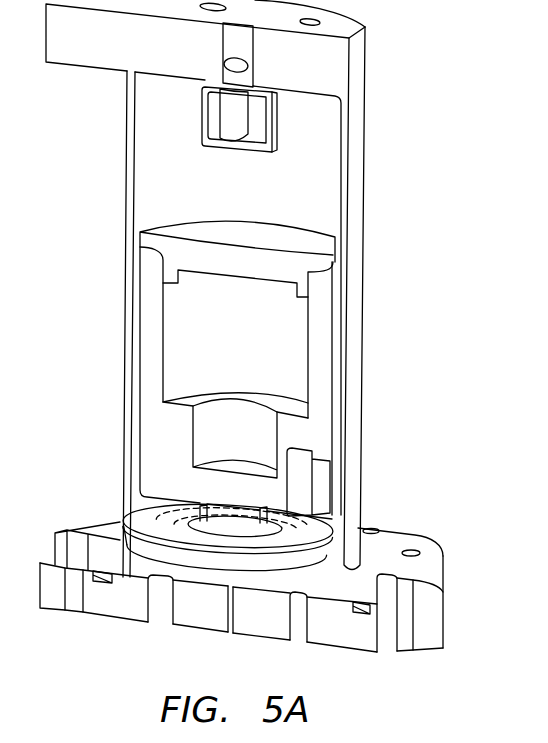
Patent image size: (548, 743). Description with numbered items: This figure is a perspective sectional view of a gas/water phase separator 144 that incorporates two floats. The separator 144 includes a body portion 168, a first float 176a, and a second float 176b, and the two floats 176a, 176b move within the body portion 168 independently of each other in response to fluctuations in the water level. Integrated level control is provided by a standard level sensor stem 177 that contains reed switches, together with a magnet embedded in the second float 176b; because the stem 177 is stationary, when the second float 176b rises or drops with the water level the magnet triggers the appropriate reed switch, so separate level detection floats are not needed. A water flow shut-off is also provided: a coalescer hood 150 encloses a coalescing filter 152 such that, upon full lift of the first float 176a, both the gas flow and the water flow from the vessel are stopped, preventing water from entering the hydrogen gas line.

The separator 144 is at (263, 326).
The coalescer hood 150 is at (272, 152).
The coalescing filter 152 is at (221, 116).
The body portion 168 is at (366, 110).
The first float 176a is at (172, 229).
The second float 176b is at (127, 540).
The level sensor stem 177 is at (322, 490).